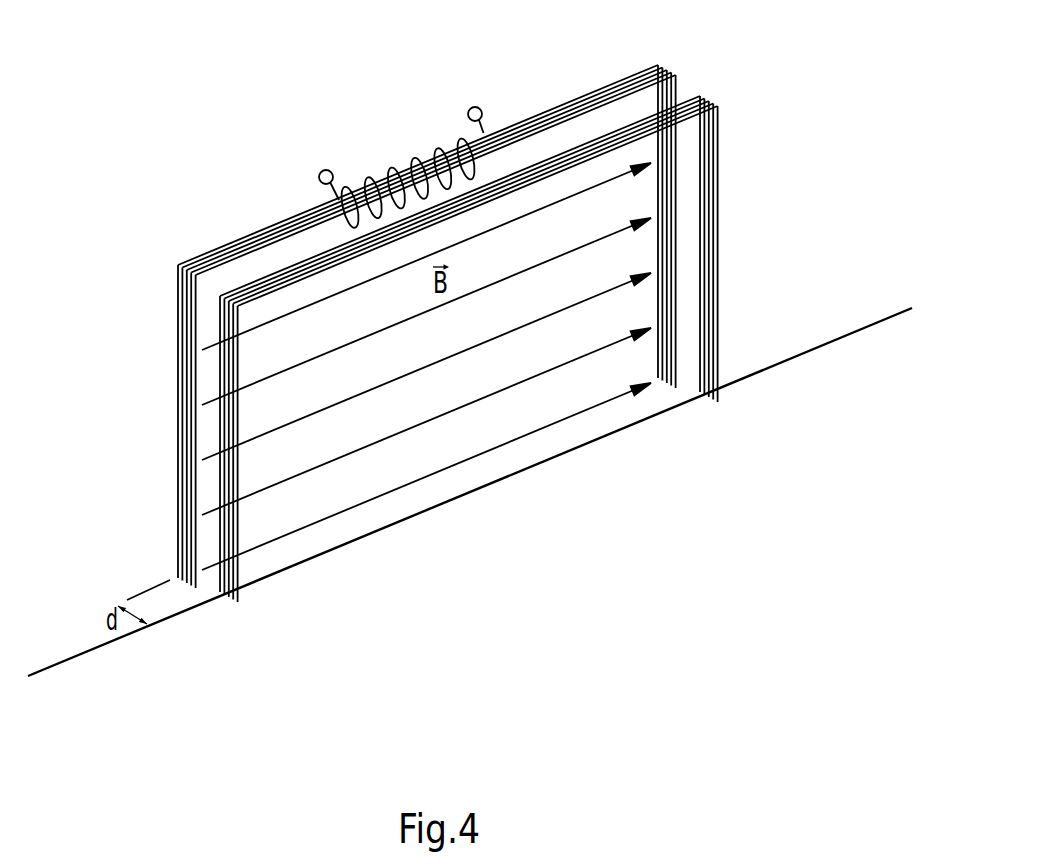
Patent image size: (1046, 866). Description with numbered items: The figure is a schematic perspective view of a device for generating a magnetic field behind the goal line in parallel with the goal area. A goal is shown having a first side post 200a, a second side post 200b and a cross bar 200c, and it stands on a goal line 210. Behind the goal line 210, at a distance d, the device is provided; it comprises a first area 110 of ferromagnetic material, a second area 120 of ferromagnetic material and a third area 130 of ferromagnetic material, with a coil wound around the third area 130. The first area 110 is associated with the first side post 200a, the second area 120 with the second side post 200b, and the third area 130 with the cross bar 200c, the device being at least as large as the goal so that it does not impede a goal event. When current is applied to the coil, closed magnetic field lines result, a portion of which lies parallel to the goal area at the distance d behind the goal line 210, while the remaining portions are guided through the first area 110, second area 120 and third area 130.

The first area 110 is at (177, 525).
The second area 120 is at (675, 273).
The third area 130 is at (558, 107).
The first side post 200a is at (237, 562).
The second side post 200b is at (718, 333).
The cross bar 200c is at (688, 98).
The goal line 210 is at (843, 340).